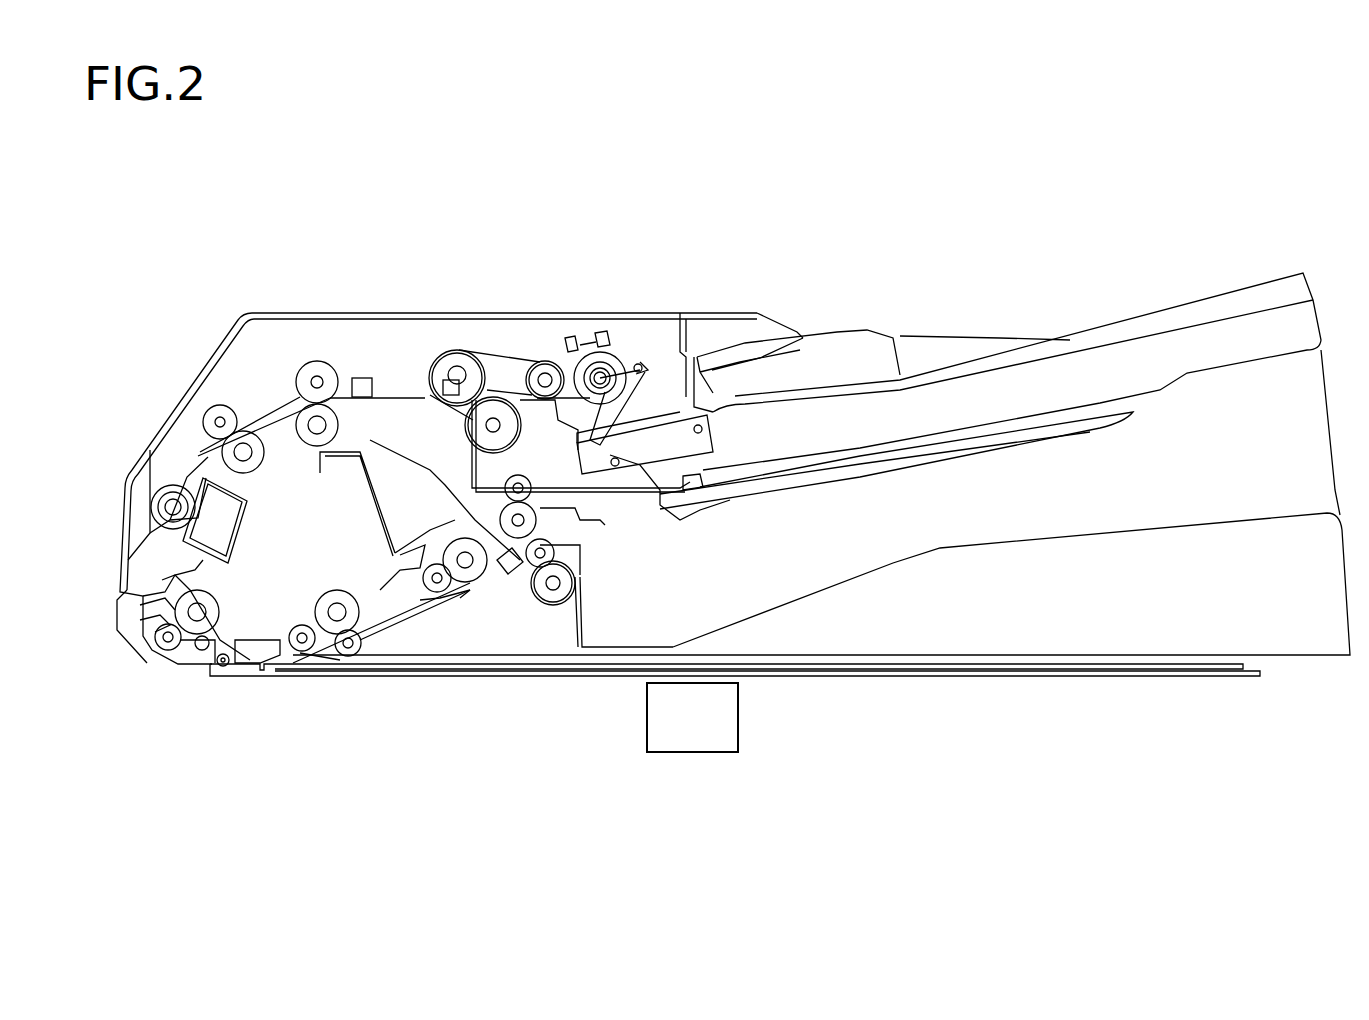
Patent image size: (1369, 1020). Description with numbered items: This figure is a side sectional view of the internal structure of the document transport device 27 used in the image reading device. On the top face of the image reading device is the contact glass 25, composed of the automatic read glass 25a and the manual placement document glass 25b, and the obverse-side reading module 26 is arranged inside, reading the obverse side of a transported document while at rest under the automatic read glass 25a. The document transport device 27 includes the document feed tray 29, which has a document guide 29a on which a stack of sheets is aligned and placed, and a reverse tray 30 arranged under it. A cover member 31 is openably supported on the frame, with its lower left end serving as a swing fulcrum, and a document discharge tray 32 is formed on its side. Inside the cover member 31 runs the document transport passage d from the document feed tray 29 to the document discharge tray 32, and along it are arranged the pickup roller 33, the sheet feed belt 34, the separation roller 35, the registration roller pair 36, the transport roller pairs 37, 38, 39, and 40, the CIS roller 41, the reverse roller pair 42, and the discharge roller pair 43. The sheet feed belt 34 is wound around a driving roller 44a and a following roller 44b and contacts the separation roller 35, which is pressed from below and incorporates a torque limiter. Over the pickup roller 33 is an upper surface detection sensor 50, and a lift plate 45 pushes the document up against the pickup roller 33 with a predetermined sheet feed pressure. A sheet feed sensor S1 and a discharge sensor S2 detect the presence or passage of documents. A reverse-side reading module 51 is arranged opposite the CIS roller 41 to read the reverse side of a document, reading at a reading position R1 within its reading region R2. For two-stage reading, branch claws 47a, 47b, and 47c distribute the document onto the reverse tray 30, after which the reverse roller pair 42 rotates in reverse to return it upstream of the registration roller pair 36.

The document transport device 27 is at (420, 232).
The cover member 31 is at (243, 318).
The registration roller pair 36 is at (316, 372).
The sheet feed sensor S1 is at (358, 378).
The transport roller pair 37 is at (220, 418).
The document transport passage d is at (278, 413).
The CIS roller 41 is at (173, 498).
The reverse-side reading module 51 is at (187, 528).
The driving roller 44a is at (443, 367).
The sheet feed belt 34 is at (453, 383).
The separation roller 35 is at (495, 412).
The following roller 44b is at (545, 372).
The upper surface detection sensor 50 is at (592, 345).
The pickup roller 33 is at (604, 368).
The lift plate 45 is at (666, 432).
The reverse roller pair 42 is at (535, 520).
The branch claw 47c is at (400, 515).
The branch claw 47a is at (385, 590).
The transport roller pair 39 is at (320, 610).
The transport roller pair 38 is at (170, 650).
The branch claw 47b is at (423, 565).
The transport roller pair 40 is at (495, 568).
The discharge sensor S2 is at (507, 575).
The discharge roller pair 43 is at (553, 592).
The document guide 29a is at (860, 342).
The document feed tray 29 is at (1125, 334).
The reverse tray 30 is at (1050, 438).
The document discharge tray 32 is at (905, 565).
The contact glass 25 is at (355, 770).
The automatic read glass 25a is at (225, 678).
The manual placement document glass 25b is at (396, 678).
The reading position R1 is at (245, 676).
The reading region R2 is at (795, 678).
The obverse-side reading module 26 is at (692, 752).